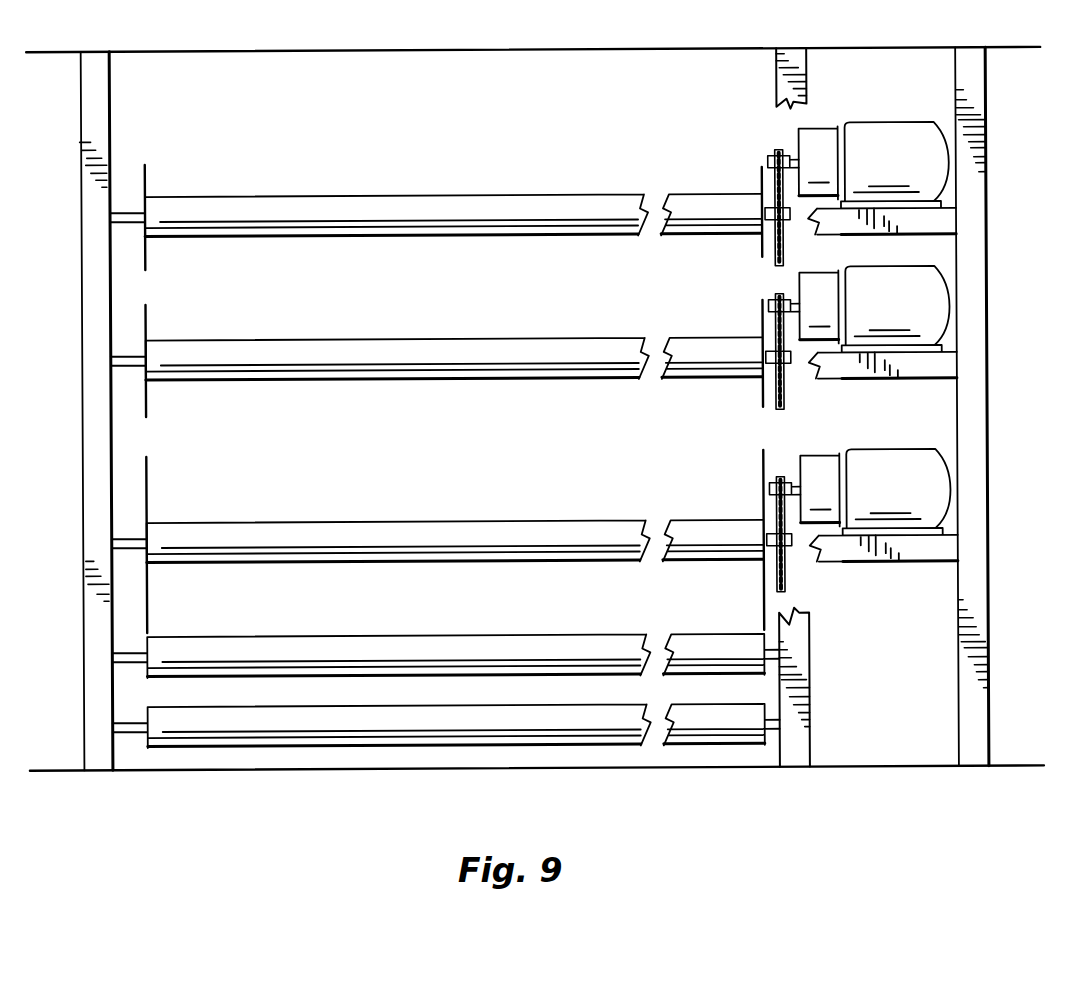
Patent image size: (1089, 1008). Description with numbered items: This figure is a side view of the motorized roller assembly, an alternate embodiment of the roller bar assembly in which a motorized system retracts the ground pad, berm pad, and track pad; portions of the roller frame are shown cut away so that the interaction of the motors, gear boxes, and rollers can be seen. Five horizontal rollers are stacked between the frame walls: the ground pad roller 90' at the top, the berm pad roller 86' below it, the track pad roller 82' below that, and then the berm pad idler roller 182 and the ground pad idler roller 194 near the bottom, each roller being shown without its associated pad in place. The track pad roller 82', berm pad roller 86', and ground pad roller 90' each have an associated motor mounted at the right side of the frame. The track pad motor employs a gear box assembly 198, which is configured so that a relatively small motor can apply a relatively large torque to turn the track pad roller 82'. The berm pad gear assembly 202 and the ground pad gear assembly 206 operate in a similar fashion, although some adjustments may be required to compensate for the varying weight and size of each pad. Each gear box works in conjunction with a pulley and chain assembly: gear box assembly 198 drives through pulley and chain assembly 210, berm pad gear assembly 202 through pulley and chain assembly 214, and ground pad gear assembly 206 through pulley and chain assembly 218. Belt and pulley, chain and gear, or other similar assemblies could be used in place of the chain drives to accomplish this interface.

The ground pad roller 90' is at (436, 179).
The berm pad roller 86' is at (436, 323).
The track pad roller 82' is at (437, 510).
The berm pad idler roller 182 is at (213, 650).
The ground pad idler roller 194 is at (277, 724).
The ground pad gear assembly 206 is at (806, 147).
The berm pad gear assembly 202 is at (820, 285).
The gear box assembly 198 is at (814, 471).
The pulley and chain assembly 218 is at (768, 250).
The pulley and chain assembly 214 is at (770, 405).
The pulley and chain assembly 210 is at (769, 584).